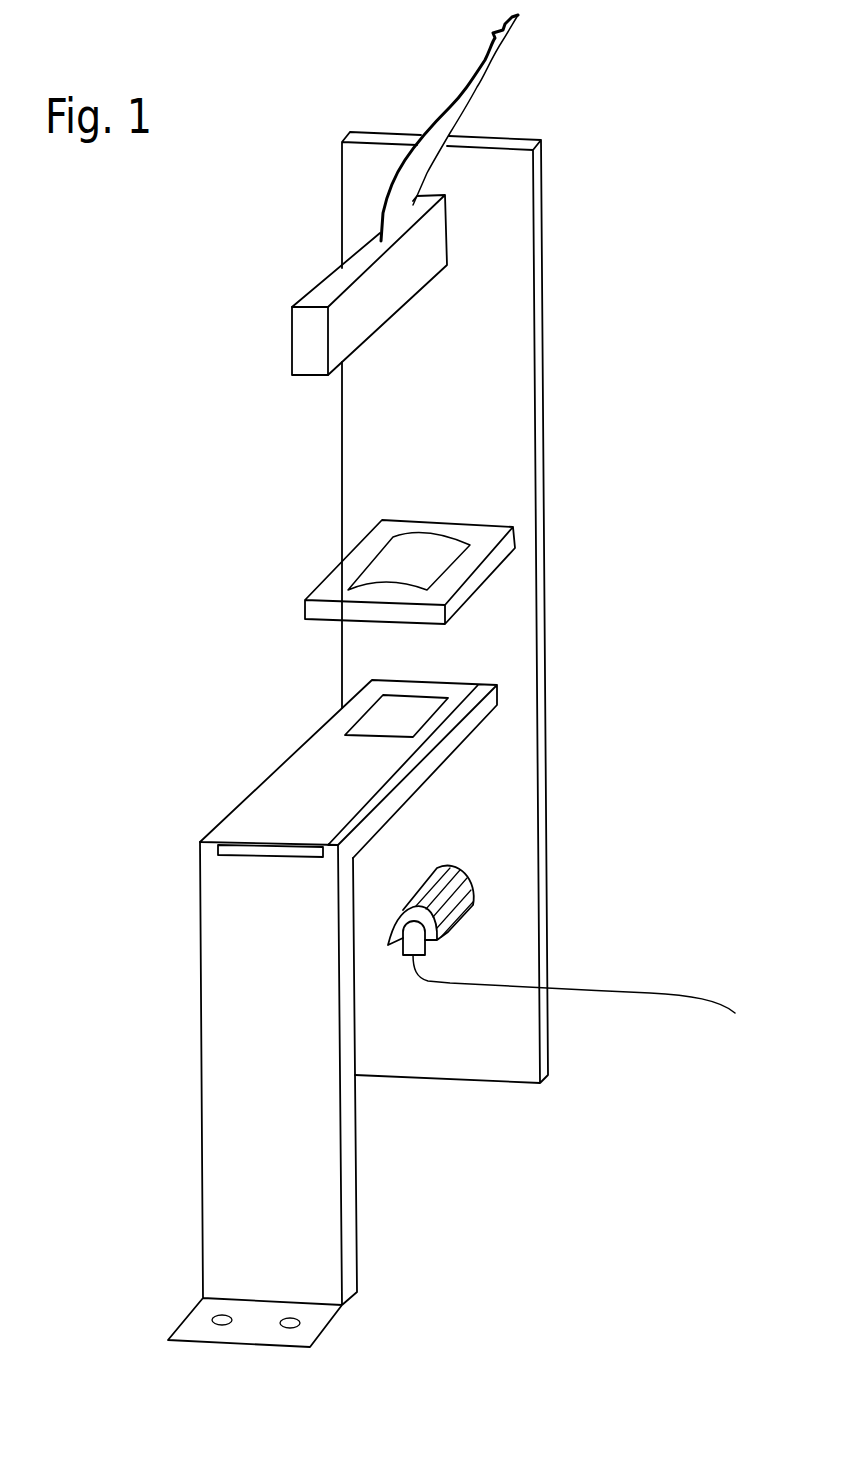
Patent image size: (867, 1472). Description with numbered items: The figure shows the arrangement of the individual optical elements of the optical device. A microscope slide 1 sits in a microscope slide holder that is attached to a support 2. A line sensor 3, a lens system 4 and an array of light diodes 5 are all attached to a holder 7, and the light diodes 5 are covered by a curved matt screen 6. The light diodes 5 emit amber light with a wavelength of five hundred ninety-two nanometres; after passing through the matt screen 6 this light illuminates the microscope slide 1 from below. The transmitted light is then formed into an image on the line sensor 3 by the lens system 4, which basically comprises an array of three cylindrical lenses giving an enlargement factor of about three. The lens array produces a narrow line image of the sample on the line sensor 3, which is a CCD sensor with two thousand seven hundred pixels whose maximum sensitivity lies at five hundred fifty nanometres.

The microscope slide 1 is at (313, 775).
The support 2 is at (310, 1228).
The line sensor 3 is at (307, 333).
The lens system 4 is at (497, 561).
The array of light diodes 5 is at (415, 940).
The curved matt screen 6 is at (465, 888).
The holder 7 is at (507, 389).